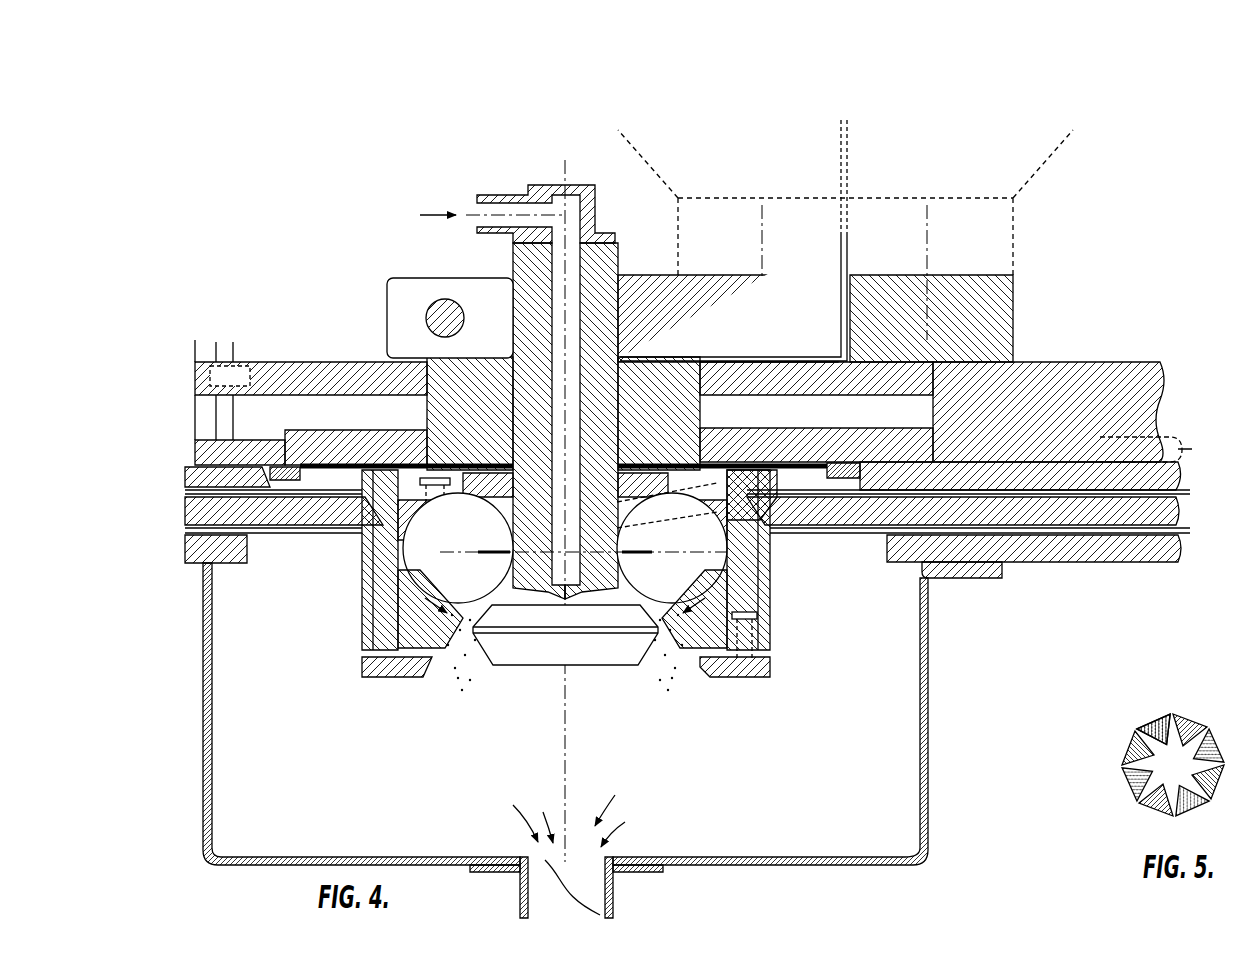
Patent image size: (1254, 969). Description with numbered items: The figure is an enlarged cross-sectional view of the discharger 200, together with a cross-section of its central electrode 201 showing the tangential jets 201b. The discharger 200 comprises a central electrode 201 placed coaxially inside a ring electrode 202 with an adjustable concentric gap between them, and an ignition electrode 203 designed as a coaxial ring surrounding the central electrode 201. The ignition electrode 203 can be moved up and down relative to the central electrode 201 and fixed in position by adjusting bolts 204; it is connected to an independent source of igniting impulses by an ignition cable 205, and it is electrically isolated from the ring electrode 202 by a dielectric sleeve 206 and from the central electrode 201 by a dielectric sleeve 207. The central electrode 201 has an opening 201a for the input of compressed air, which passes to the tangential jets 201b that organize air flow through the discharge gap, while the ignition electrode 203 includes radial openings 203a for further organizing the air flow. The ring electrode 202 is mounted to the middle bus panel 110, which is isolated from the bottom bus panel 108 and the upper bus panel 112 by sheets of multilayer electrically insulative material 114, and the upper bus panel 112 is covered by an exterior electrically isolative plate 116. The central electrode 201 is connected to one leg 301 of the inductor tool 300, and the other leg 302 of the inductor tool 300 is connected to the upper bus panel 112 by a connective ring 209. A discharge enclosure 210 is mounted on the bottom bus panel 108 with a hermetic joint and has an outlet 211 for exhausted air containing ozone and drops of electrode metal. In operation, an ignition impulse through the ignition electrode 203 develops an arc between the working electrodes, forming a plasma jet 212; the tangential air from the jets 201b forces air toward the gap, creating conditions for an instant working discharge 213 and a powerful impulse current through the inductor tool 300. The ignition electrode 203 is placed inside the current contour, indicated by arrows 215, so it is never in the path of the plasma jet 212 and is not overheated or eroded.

In FIG. 4, the bottom bus panel 108 is at (1037, 556).
In FIG. 4, the middle bus panel 110 is at (1057, 518).
In FIG. 4, the upper bus panel 112 is at (1063, 482).
In FIG. 4, the sheets of multilayer electrically insulative material 114 is at (1190, 533).
In FIG. 4, the exterior electrically isolative plate 116 is at (1150, 372).
In FIG. 4, the discharger 200 is at (503, 718).
In FIG. 4, the central electrode 201 is at (630, 658).
In FIG. 5, the central electrode 201 is at (1135, 790).
In FIG. 4, the opening 201a is at (500, 212).
In FIG. 4, the tangential jets 201b is at (505, 545).
In FIG. 5, the tangential jets 201b is at (1158, 740).
In FIG. 4, the ring electrode 202 is at (745, 550).
In FIG. 4, the ignition electrode 203 is at (745, 620).
In FIG. 4, the radial openings 203a is at (510, 553).
In FIG. 4, the adjusting bolts 204 is at (440, 485).
In FIG. 4, the ignition cable 205 is at (1162, 442).
In FIG. 4, the dielectric sleeve 206 is at (765, 500).
In FIG. 4, the dielectric sleeve 207 is at (500, 390).
In FIG. 4, the connective ring 209 is at (280, 370).
In FIG. 4, the discharge enclosure 210 is at (930, 808).
In FIG. 4, the outlet 211 is at (600, 893).
In FIG. 4, the plasma jet 212 is at (455, 680).
In FIG. 4, the working discharge 213 is at (380, 658).
In FIG. 4, the arrows 215 is at (378, 622).
In FIG. 4, the inductor tool 300 is at (940, 170).
In FIG. 4, the leg 301 is at (415, 285).
In FIG. 4, the leg 302 is at (1005, 283).